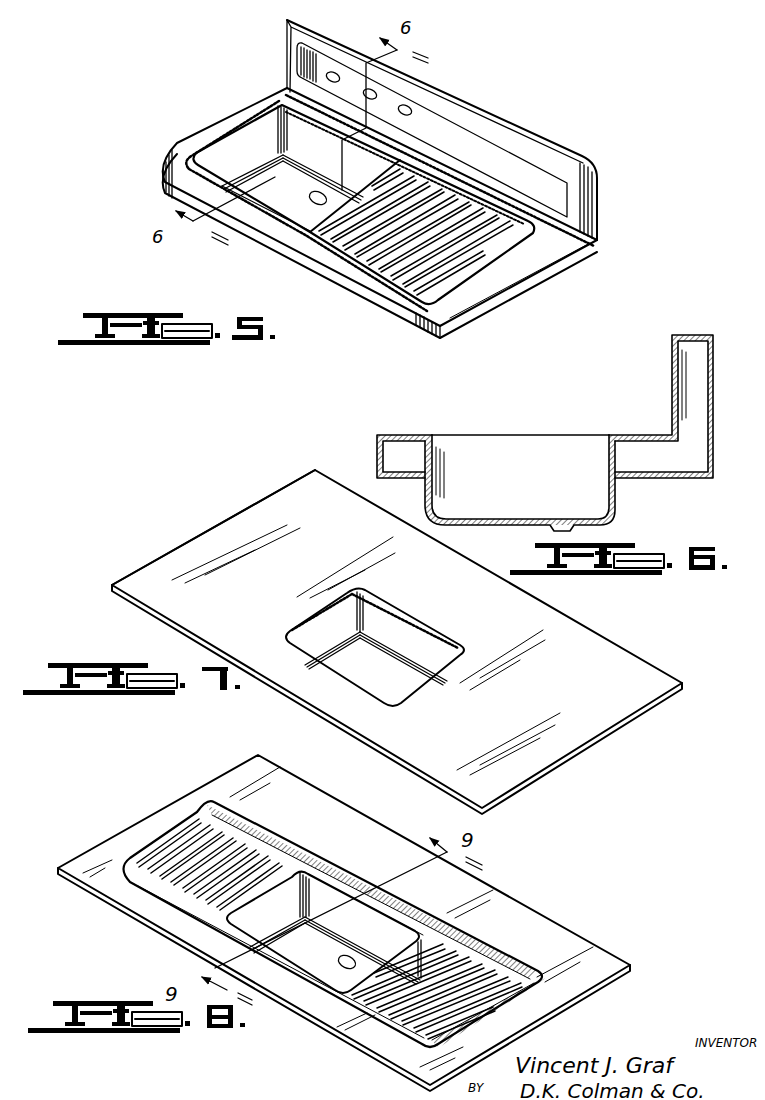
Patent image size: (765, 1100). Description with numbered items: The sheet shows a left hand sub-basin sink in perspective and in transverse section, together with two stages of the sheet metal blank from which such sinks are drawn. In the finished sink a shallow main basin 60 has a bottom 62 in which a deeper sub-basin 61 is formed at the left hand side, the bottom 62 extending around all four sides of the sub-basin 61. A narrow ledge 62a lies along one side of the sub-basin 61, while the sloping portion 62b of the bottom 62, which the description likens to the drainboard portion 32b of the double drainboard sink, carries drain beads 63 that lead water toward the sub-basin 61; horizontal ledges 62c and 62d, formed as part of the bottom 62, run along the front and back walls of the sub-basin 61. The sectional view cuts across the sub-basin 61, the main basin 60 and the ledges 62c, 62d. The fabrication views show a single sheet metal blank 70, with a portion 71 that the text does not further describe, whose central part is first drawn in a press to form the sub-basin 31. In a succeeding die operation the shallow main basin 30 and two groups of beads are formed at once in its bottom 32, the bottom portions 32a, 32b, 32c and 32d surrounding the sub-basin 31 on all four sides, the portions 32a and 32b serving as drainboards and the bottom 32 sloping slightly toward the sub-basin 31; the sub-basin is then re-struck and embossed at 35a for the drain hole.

In FIG. 8, the main basin 30 is at (207, 807).
In FIG. 7, the sub-basin 31 is at (415, 625).
In FIG. 8, the sub-basin 31 is at (322, 892).
In FIG. 8, the bottom of the main basin 32 is at (125, 857).
In FIG. 8, the drainboard portion of the bottom 32a is at (173, 830).
In FIG. 8, the drainboard portion of the bottom 32b is at (540, 976).
In FIG. 8, the portion of the bottom 32c is at (348, 887).
In FIG. 8, the portion of the bottom 32d is at (197, 956).
In FIG. 8, the embossed portion for the drain hole 35a is at (405, 915).
In FIG. 5, the main basin 60 is at (255, 120).
In FIG. 6, the main basin 60 is at (465, 435).
In FIG. 5, the sub-basin 61 is at (212, 160).
In FIG. 6, the sub-basin 61 is at (502, 453).
In FIG. 5, the bottom of the main basin 62 is at (330, 228).
In FIG. 5, the narrow ledge 62a is at (238, 150).
In FIG. 5, the right end flange 62b is at (517, 253).
In FIG. 5, the horizontal ledge 62c is at (283, 92).
In FIG. 6, the horizontal ledge 62c is at (615, 437).
In FIG. 5, the horizontal ledge 62d is at (165, 188).
In FIG. 6, the horizontal ledge 62d is at (432, 436).
In FIG. 5, the beads 63 is at (413, 280).
In FIG. 7, the sheet metal blank 70 is at (233, 517).
In FIG. 7, the rear edge of counter top 71 is at (275, 490).